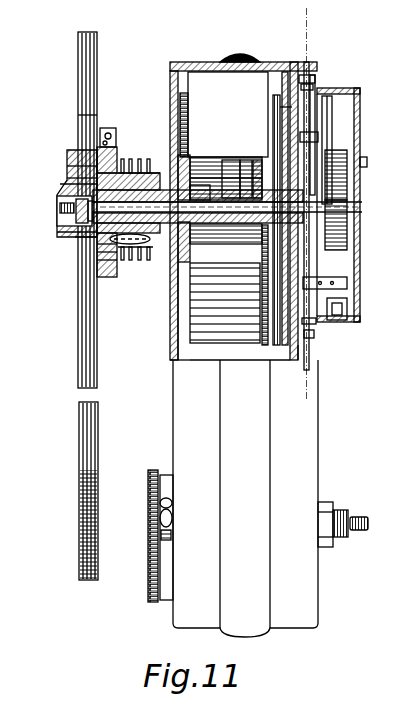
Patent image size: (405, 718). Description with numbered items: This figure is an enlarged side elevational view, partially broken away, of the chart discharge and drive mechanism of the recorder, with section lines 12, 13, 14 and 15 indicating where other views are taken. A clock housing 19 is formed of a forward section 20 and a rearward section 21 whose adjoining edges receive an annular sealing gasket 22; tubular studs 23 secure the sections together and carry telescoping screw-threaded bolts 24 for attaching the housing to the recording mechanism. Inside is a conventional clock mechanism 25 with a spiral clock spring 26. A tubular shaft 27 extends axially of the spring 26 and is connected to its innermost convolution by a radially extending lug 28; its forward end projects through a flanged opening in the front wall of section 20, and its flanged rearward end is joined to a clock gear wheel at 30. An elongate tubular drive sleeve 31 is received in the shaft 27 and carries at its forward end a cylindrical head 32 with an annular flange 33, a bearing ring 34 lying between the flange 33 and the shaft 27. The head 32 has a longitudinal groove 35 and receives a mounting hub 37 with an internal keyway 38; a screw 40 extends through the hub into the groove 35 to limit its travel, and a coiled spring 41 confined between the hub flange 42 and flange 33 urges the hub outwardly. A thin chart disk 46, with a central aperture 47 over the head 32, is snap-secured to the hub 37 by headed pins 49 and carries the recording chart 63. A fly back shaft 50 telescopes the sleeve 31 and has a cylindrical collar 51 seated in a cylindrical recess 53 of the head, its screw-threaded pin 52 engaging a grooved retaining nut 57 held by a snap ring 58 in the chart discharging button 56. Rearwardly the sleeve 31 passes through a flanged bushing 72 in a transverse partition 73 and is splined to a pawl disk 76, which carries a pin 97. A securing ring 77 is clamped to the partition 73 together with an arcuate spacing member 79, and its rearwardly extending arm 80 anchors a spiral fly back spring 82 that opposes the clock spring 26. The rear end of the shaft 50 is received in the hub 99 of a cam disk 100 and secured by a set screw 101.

The section line 12- 12 is at (292, 27).
The section line 13- 13 is at (327, 47).
The section line 14- 14 is at (300, 60).
The section line 15- 15 is at (110, 117).
The clock housing 19 is at (347, 460).
The forward section 20 is at (173, 402).
The rearward section 21 is at (318, 420).
The annular sealing gasket 22 is at (250, 632).
The tubular studs 23 is at (340, 541).
The telescoping screw-threaded bolts 24 is at (352, 518).
The clock mechanism 25 is at (170, 343).
The clock spring 26 is at (246, 166).
The tubular shaft 27 is at (242, 176).
The radially extending lug 28 is at (212, 172).
The flanged joint to gear wheel 30 is at (257, 180).
The tubular drive sleeve 31 is at (206, 192).
The cylindrical head 32 is at (100, 246).
The annular flange 33 is at (152, 255).
The bearing ring 34 is at (153, 161).
The longitudinal groove 35 is at (72, 178).
The mounting hub 37 is at (117, 260).
The internal keyway 38 is at (110, 252).
The screw 40 is at (92, 153).
The coiled spring 41 is at (142, 163).
The radially outwardly extending flange 42 is at (122, 270).
The chart disk 46 is at (98, 556).
The central aperture 47 is at (70, 183).
The headed pins 49 is at (115, 141).
The fly back shaft 50 is at (238, 226).
The cylindrical collar 51 is at (75, 232).
The screw-threaded pin 52 is at (63, 208).
The cylindrical recess 53 is at (90, 236).
The chart discharging button 56 is at (68, 166).
The grooved retaining nut 57 is at (62, 217).
The snap ring 58 is at (72, 222).
The recording chart 63 is at (78, 556).
The flanged bushing 72 is at (283, 121).
The transverse partition 73 is at (279, 106).
The pawl disk 76 is at (320, 283).
The securing ring 77 is at (312, 326).
The arcuate spacing member 79 is at (268, 362).
The rearwardly extending arm 80 is at (340, 301).
The spiral fly back spring 82 is at (340, 150).
The pin 97 is at (321, 121).
The hub 99 is at (340, 214).
The cam disk 100 is at (350, 237).
The set screw 101 is at (355, 189).